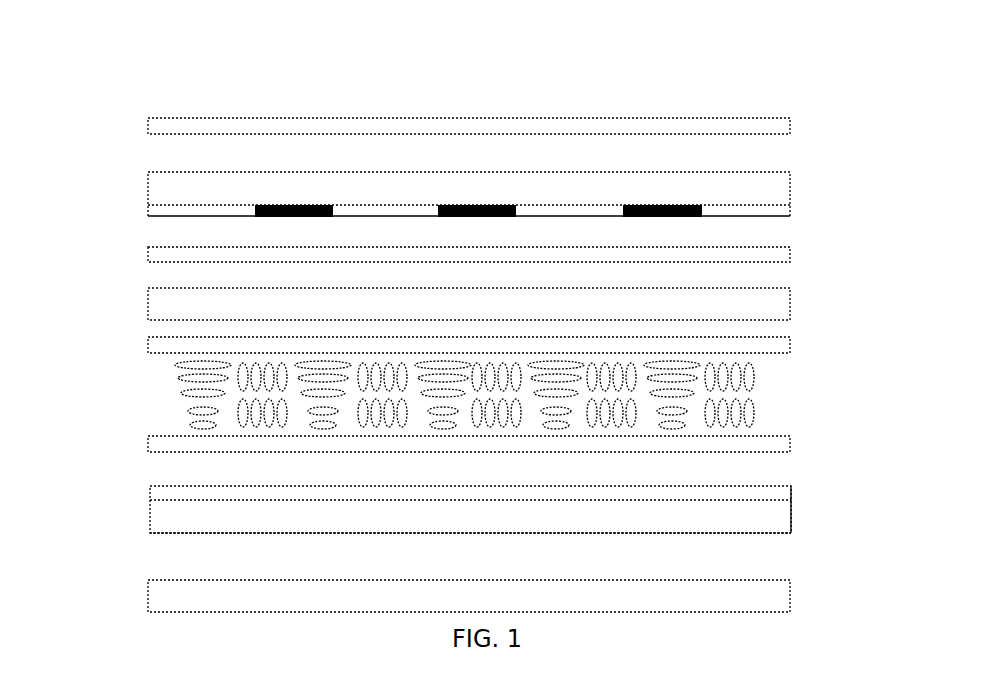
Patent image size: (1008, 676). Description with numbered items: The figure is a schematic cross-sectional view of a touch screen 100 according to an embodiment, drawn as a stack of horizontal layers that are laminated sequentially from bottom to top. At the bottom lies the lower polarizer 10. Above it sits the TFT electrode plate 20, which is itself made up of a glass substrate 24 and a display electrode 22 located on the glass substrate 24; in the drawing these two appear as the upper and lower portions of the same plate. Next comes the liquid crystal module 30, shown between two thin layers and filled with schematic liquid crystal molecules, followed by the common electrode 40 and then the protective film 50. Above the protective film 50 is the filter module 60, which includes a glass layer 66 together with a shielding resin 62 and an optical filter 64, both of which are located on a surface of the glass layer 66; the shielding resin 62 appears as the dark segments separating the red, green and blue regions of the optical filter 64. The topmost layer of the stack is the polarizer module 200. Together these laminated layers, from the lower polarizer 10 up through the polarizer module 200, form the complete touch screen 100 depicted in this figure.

The touch screen 100 is at (505, 45).
The polarizer module 200 is at (790, 123).
The filter module 60 is at (433, 187).
The shielding resin 62 is at (255, 206).
The optical filter 64 is at (148, 214).
The glass layer 66 is at (148, 188).
The protective film 50 is at (790, 250).
The common electrode 40 is at (775, 306).
The liquid crystal module 30 is at (804, 336).
The TFT electrode plate 20 is at (437, 502).
The display electrode 22 is at (150, 488).
The glass substrate 24 is at (150, 524).
The lower polarizer 10 is at (790, 585).